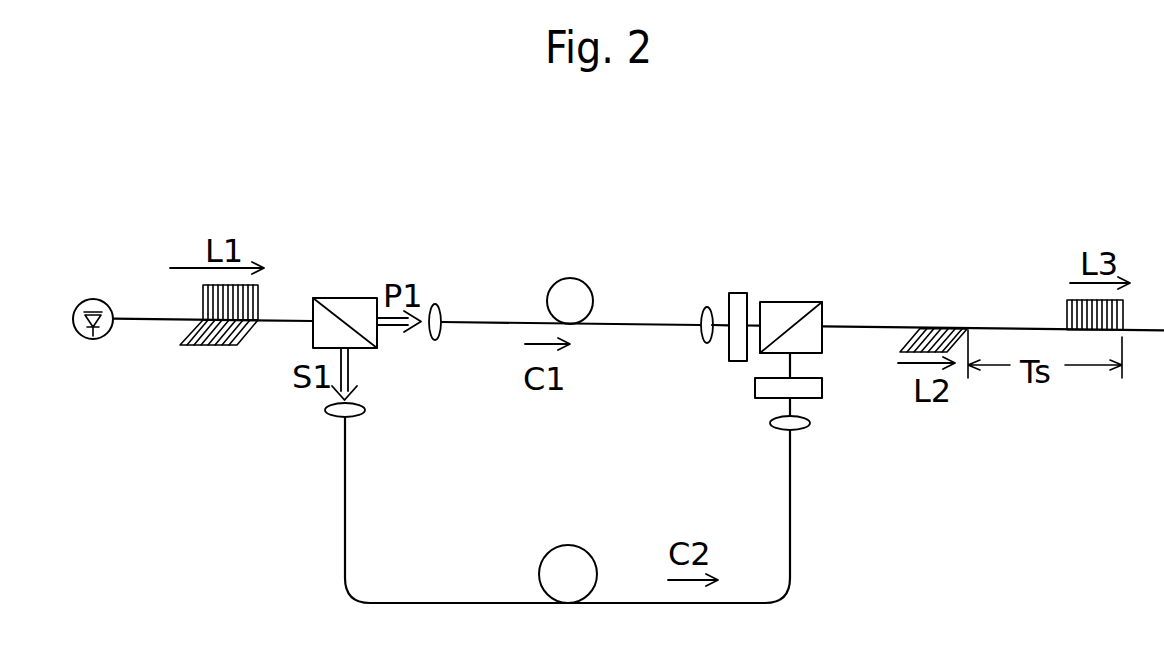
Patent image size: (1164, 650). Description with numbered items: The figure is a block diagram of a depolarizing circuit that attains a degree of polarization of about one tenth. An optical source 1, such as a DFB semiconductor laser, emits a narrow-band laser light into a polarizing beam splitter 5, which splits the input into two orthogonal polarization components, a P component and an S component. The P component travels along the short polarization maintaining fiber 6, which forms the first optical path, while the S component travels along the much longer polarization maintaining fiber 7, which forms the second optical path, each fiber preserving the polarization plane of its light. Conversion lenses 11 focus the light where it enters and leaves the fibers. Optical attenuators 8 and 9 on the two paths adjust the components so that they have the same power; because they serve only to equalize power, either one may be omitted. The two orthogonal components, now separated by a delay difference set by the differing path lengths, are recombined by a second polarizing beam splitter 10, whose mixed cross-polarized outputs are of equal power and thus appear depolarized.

The optical source 1 is at (97, 339).
The polarizing beam splitter 5 is at (318, 298).
The polarization maintaining fiber 6 is at (490, 322).
The polarization maintaining fiber 7 is at (455, 603).
The optical attenuator 8 is at (730, 298).
The optical attenuator 9 is at (823, 389).
The polarizing beam splitter 10 is at (775, 302).
The conversion lens 11 is at (435, 340).